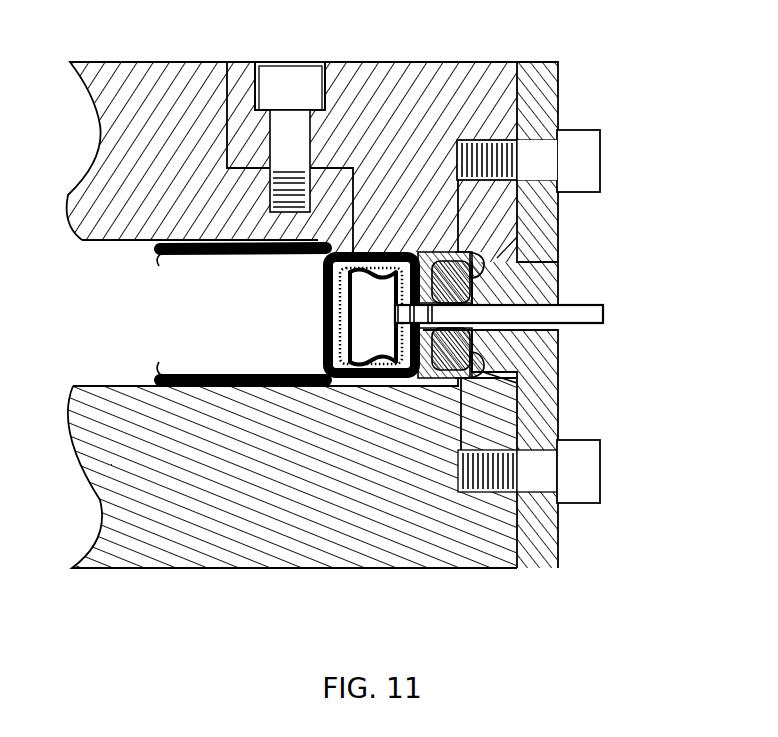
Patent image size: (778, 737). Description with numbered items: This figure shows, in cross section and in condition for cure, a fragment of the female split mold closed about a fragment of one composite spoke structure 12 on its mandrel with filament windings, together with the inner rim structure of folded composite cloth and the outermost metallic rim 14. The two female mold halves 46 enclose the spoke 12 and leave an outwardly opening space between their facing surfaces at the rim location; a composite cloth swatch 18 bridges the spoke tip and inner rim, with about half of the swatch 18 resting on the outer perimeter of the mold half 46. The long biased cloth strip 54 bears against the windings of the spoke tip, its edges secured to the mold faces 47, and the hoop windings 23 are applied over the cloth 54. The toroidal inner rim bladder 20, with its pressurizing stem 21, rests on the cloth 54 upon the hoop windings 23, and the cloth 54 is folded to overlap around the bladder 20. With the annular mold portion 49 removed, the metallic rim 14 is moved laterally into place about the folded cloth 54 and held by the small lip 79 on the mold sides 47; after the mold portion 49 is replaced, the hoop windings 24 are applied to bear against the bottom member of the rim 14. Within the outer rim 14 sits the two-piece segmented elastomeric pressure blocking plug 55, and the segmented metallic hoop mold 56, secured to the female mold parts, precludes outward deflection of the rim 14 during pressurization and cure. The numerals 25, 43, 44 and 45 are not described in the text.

The composite spoke structure 12 is at (172, 240).
The metallic outer rim 14 is at (457, 250).
The composite cloth swatch 18 is at (313, 250).
The inner rim bladder 20 is at (435, 252).
The bladder pressurizing stem 21 is at (605, 322).
The hoop windings 23 is at (357, 383).
The hoop windings 24 is at (483, 352).
The seal flanges 25 is at (210, 373).
The bolt head 43 is at (517, 237).
The support block 44 is at (540, 362).
The lower housing 45 is at (213, 503).
The female mold half 46 is at (92, 200).
The mold face 47 is at (493, 422).
The annular mold portion 49 is at (372, 115).
The biased cloth strip 54 is at (387, 255).
The pressure blocking plug 55 is at (455, 290).
The hoop mold 56 is at (543, 530).
The small lip 79 is at (487, 240).